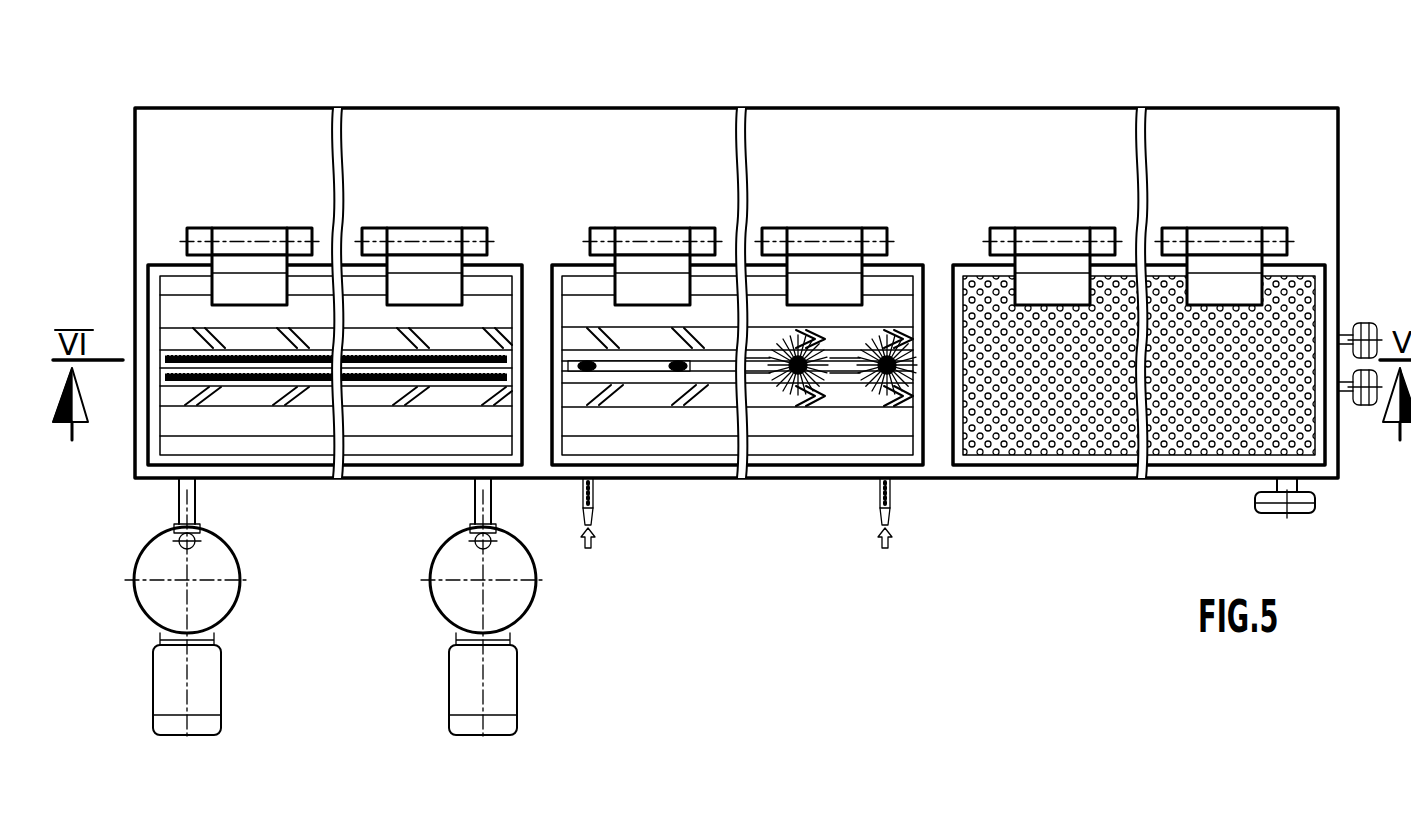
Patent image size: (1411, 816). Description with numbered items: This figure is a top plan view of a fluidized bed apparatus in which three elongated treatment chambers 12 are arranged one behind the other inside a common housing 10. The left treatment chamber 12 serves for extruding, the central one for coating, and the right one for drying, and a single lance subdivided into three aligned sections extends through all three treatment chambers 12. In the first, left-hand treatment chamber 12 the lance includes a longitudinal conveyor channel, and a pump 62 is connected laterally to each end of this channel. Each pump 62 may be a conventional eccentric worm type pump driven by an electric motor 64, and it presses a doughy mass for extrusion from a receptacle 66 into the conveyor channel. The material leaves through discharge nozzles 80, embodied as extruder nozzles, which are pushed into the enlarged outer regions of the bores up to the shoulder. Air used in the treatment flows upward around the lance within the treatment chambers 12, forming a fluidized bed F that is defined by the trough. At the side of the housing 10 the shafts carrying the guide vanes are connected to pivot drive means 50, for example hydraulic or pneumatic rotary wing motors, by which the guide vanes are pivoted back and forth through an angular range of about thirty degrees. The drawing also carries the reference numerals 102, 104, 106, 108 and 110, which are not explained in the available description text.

The housing 10 is at (474, 98).
The treatment chamber 12 is at (507, 254).
The conveyor belt 102 is at (187, 334).
The discharge nozzle 80 is at (585, 360).
The spray nozzle 104 is at (684, 362).
The pump 62 is at (196, 513).
The receptacle 66 is at (222, 604).
The electric motor 64 is at (213, 698).
The drain outlet 106 is at (778, 539).
The drain outlet 108 is at (778, 539).
The drain outlet 110 is at (594, 508).
The pivot drive means 50 is at (1366, 322).
The fluidized bed F is at (1073, 422).